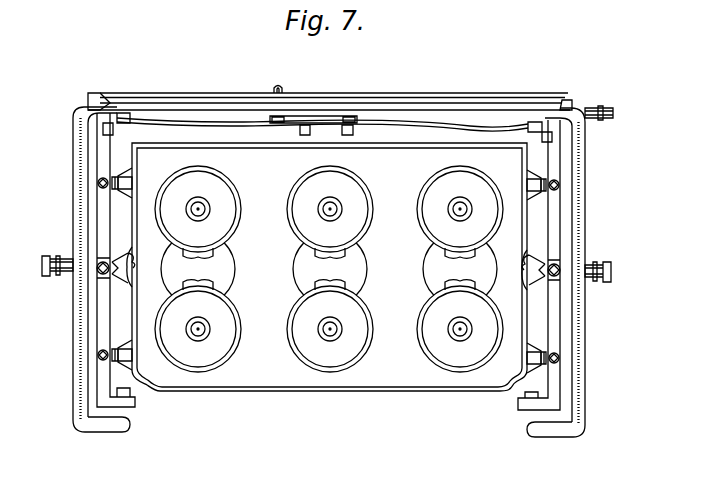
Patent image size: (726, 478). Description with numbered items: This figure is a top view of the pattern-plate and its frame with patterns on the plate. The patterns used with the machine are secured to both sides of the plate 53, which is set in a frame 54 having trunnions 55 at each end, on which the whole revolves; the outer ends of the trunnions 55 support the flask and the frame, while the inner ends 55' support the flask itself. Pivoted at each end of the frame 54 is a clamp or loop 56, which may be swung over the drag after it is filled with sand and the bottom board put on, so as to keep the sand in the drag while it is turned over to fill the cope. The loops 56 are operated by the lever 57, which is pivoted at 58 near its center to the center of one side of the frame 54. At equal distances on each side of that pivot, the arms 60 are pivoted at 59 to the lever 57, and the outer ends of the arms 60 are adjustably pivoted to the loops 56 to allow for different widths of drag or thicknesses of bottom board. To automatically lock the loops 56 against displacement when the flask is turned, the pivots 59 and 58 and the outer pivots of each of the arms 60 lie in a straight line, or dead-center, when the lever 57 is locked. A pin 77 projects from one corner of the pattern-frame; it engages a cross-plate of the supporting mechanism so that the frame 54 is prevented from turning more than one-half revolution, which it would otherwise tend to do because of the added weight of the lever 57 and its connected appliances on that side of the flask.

The plate 53 is at (327, 267).
The frame 54 is at (359, 117).
The trunnions 55 is at (334, 275).
The inner ends of the trunnions 55' is at (331, 265).
The clamp or loop 56 is at (595, 195).
The lever 57 is at (284, 87).
The pivot of the lever 58 is at (322, 114).
The pivots of the arms 59 is at (305, 136).
The arms 60 is at (220, 124).
The pin 77 is at (585, 105).